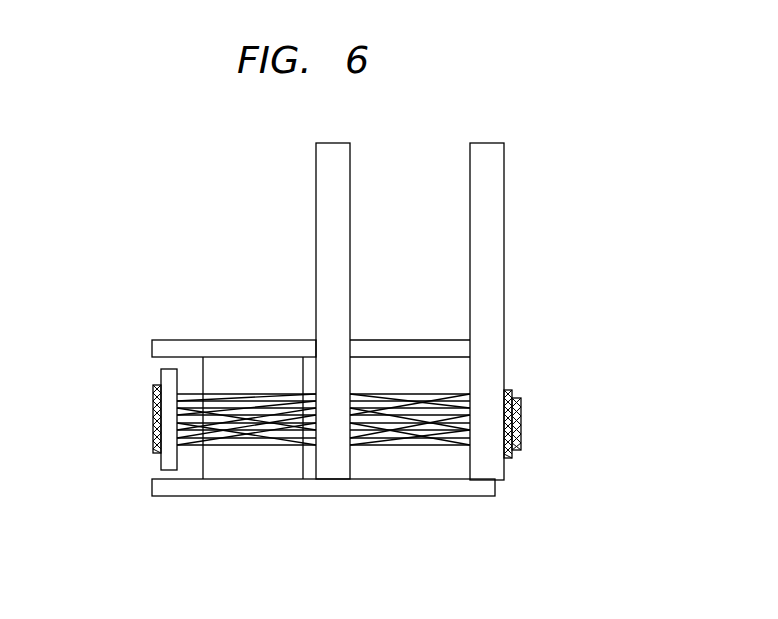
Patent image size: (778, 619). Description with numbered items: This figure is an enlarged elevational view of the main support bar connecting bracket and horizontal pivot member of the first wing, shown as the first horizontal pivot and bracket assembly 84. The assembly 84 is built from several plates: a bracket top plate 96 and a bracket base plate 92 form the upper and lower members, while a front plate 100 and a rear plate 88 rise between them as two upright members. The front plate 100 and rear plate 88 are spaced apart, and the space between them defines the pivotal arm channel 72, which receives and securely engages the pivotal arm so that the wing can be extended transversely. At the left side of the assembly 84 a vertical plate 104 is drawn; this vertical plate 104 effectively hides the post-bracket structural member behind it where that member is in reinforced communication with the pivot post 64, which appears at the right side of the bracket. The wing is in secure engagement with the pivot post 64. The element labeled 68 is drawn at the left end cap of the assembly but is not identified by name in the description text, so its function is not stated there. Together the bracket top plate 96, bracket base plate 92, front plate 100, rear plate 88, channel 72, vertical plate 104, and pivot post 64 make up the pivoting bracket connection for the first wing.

The pivot post 64 is at (528, 423).
The first end cap 68 is at (157, 375).
The pivotal arm channel 72 is at (470, 143).
The first horizontal pivot and bracket assembly 84 is at (180, 196).
The rear plate 88 is at (500, 237).
The bracket base plate 92 is at (331, 492).
The bracket top plate 96 is at (418, 350).
The front plate 100 is at (323, 392).
The vertical plate 104 is at (253, 455).